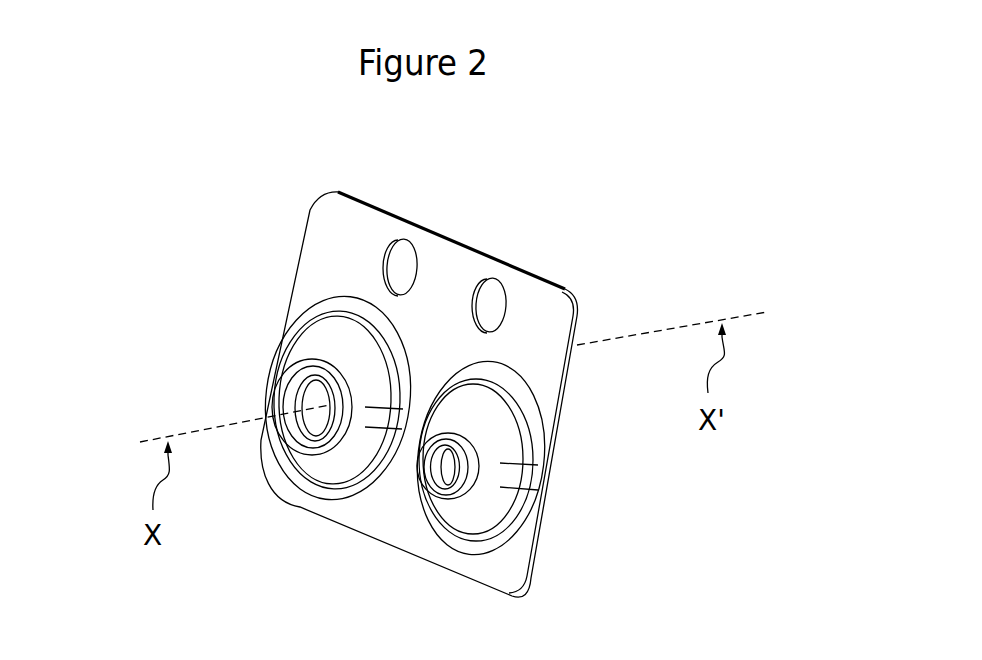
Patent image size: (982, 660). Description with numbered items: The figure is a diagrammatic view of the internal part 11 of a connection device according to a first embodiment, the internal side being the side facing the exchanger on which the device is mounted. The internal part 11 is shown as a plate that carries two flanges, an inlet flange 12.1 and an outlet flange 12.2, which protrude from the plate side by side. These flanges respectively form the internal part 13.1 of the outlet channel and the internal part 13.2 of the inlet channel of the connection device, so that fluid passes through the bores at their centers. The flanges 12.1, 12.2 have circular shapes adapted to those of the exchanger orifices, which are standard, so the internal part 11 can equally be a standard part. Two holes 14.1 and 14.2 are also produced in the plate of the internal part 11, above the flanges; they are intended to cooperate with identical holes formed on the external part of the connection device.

The internal part 11 is at (716, 240).
The inlet flange 12.1 is at (310, 359).
The outlet flange 12.2 is at (468, 453).
The internal part of the outlet channel 13.1 is at (317, 418).
The internal part of the inlet channel 13.2 is at (444, 467).
The hole 14.1 is at (398, 265).
The hole 14.2 is at (492, 300).